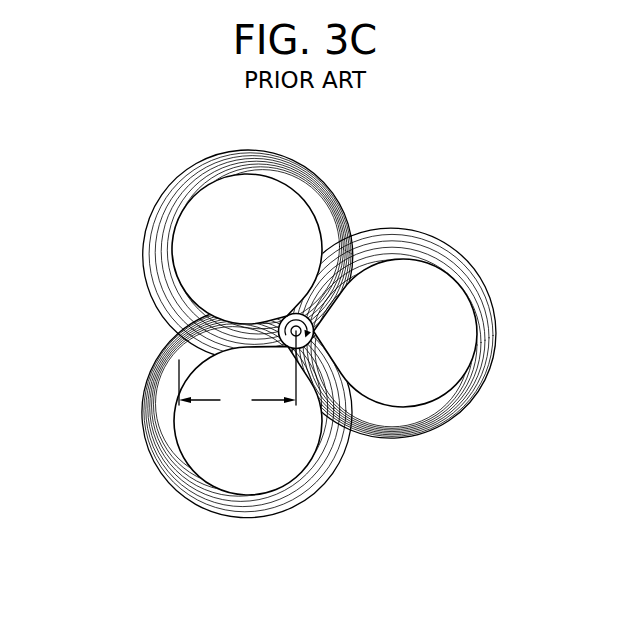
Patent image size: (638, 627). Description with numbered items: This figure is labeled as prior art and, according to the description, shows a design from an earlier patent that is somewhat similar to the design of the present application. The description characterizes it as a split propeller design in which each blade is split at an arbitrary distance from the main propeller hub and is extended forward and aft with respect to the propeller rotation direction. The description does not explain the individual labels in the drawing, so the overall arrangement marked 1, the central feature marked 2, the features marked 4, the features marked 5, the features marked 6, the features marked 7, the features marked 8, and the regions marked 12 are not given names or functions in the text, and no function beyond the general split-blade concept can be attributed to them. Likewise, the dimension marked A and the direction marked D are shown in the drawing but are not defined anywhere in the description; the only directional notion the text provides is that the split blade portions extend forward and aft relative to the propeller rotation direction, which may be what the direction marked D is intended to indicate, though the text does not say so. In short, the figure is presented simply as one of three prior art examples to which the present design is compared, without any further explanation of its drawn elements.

The cable assembly 1 is at (150, 178).
The central strength member 2 is at (310, 342).
The web 4 is at (248, 323).
The inner layer of tube wall 5 is at (188, 295).
The outer layer of tube wall 6 is at (355, 231).
The inner surface 7 is at (172, 256).
The outer surface 8 is at (192, 168).
The channel 12 is at (238, 254).
The distance between centers A is at (237, 371).
The direction of rotation D is at (293, 313).